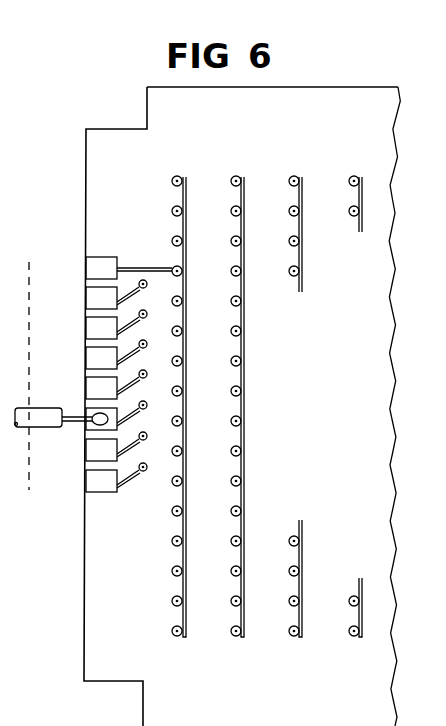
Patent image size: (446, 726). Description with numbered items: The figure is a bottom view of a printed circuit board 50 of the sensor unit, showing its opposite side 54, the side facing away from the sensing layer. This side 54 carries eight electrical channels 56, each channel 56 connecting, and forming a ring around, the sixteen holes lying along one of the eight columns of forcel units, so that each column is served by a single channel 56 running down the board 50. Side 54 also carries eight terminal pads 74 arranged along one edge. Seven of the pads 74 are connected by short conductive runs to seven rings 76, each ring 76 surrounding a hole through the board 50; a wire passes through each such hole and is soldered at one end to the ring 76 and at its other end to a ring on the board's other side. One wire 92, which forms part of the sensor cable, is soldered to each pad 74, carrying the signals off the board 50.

The printed circuit board 50 is at (150, 86).
The opposite side 54 is at (297, 96).
The electrical channels 56 is at (186, 190).
The terminal pads 74 is at (100, 298).
The rings 76 is at (146, 287).
The wire 92 is at (73, 414).